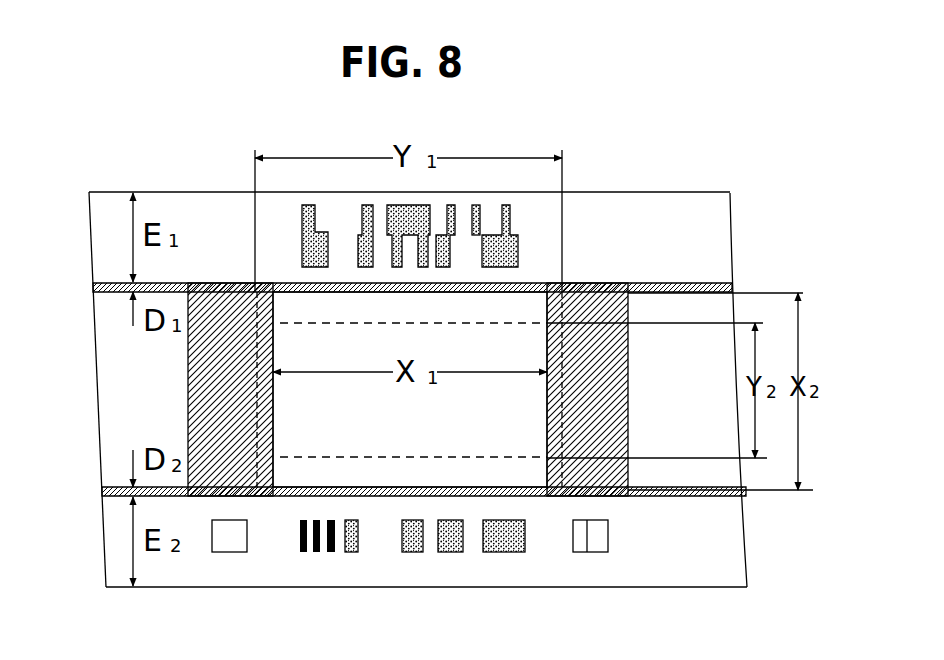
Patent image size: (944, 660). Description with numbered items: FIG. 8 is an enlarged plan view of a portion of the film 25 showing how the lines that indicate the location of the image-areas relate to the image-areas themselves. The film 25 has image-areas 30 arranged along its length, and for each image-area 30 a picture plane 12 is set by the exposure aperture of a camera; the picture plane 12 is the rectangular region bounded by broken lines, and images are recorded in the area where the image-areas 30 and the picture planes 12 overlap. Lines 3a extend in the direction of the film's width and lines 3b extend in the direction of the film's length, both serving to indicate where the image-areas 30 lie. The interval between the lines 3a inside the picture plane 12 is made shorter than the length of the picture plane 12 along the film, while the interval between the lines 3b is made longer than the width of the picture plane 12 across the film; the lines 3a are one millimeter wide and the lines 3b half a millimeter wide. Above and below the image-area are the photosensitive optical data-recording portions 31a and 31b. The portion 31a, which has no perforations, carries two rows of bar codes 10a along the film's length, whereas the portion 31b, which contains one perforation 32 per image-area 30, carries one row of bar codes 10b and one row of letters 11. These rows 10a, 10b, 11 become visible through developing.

The film 25 is at (683, 185).
The lines extending in the direction of the film's width 3a is at (212, 378).
The lines extending in the direction of the film's length 3b is at (688, 283).
The optical data-recording portion 31a is at (232, 230).
The optical data-recording portion 31b is at (445, 577).
The bar codes 10a is at (518, 233).
The bar codes 10b is at (530, 542).
The letters 11 is at (513, 567).
The picture plane 12 is at (317, 457).
The image-areas 30 is at (288, 467).
The perforation 32 is at (588, 552).